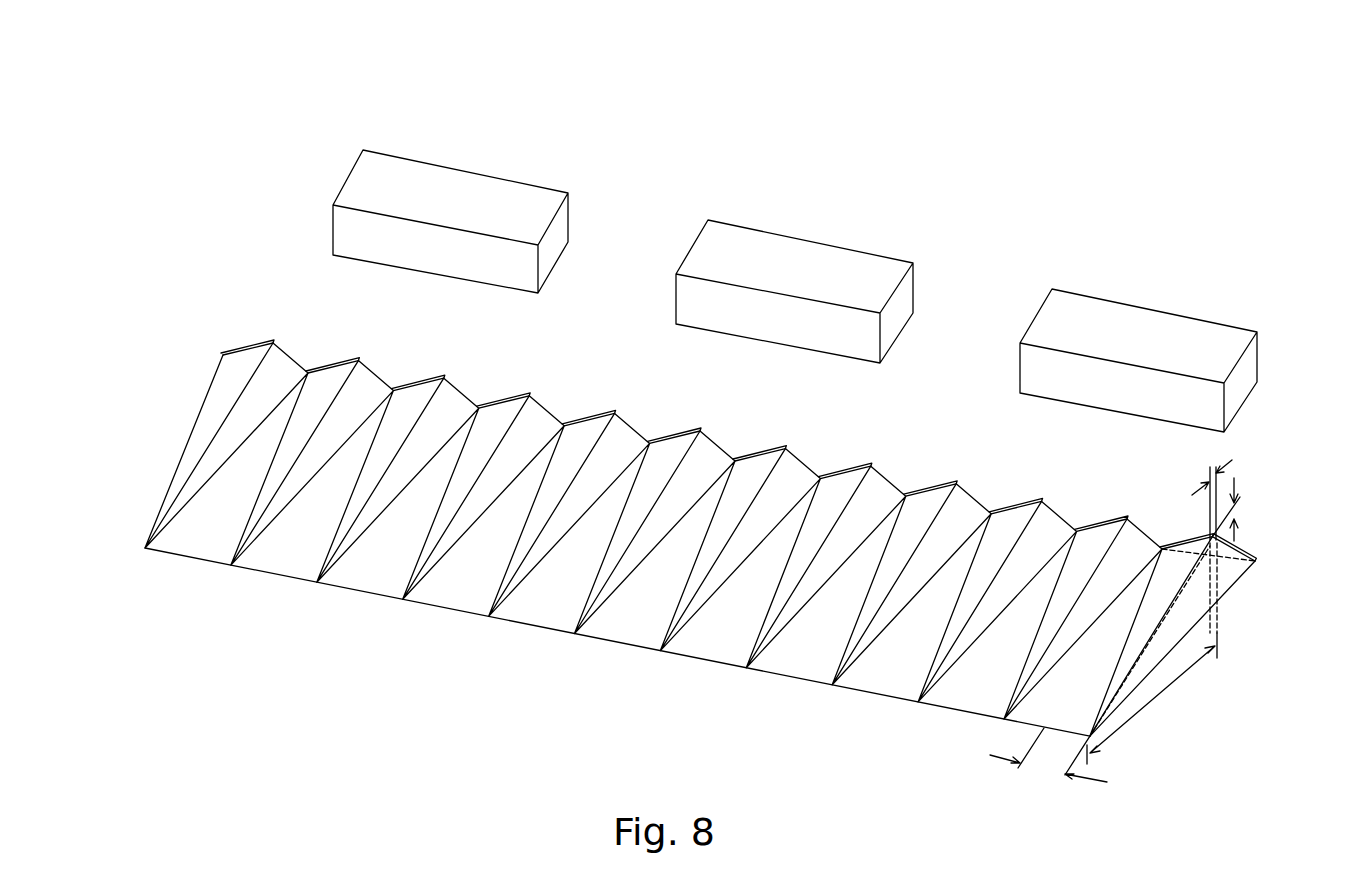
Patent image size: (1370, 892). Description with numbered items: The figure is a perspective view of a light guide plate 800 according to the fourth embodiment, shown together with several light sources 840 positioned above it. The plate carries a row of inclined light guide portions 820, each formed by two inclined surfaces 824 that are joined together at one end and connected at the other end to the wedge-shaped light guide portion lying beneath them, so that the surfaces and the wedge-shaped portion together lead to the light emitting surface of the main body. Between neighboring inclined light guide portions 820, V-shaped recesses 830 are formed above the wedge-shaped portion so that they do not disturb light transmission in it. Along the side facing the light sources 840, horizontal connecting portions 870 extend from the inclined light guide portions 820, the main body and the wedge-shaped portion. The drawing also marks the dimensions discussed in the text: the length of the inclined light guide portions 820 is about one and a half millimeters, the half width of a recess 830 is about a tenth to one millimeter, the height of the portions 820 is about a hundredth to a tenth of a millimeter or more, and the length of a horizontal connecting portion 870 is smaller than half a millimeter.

The light guide plate 800 is at (1275, 530).
The inclined light guide portions 820 is at (208, 442).
The inclined surface 824 is at (227, 368).
The recesses 830 is at (460, 595).
The light source 840 is at (448, 198).
The horizontal connecting portion 870 is at (223, 353).